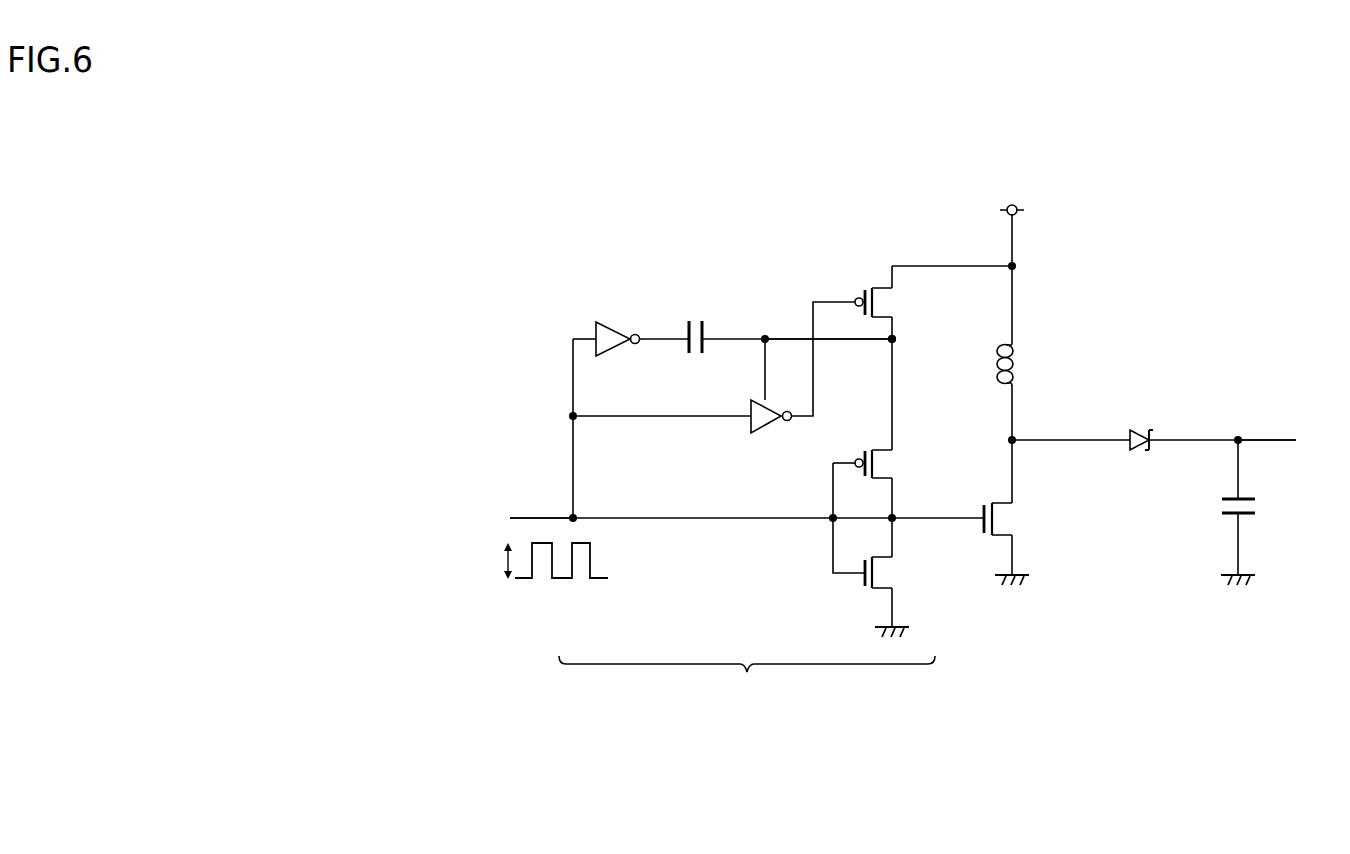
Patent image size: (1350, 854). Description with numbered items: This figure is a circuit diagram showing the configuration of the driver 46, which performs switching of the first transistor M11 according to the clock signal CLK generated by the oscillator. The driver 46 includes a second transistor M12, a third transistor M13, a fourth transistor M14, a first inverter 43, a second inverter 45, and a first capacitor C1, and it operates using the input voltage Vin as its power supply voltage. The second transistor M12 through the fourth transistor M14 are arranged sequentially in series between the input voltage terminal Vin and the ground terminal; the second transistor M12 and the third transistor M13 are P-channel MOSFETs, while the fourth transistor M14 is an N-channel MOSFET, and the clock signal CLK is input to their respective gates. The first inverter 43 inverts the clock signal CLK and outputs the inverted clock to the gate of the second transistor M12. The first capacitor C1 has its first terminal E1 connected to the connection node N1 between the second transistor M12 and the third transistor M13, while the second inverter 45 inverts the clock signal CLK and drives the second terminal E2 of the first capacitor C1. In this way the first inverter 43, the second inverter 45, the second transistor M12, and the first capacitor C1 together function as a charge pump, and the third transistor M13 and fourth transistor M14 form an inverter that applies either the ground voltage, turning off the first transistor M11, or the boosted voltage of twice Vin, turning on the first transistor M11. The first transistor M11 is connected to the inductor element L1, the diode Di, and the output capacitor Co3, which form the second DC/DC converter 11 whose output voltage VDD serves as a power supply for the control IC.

The second DC/DC converter 11 is at (912, 783).
The first inverter 43 is at (766, 431).
The second inverter 45 is at (612, 326).
The driver 46 is at (747, 680).
The first capacitor C1 is at (697, 319).
The first terminal E1 is at (723, 344).
The second terminal E2 is at (668, 344).
The first transistor M11 is at (1016, 520).
The second transistor M12 is at (897, 303).
The third transistor M13 is at (897, 463).
The fourth transistor M14 is at (897, 573).
The connection node N1 is at (900, 344).
The inductor element L1 is at (1020, 357).
The diode Di is at (1150, 427).
The output capacitor Co3 is at (1258, 507).
The input voltage Vin is at (747, 379).
The output voltage VDD is at (1267, 427).
The clock signal CLK is at (517, 519).